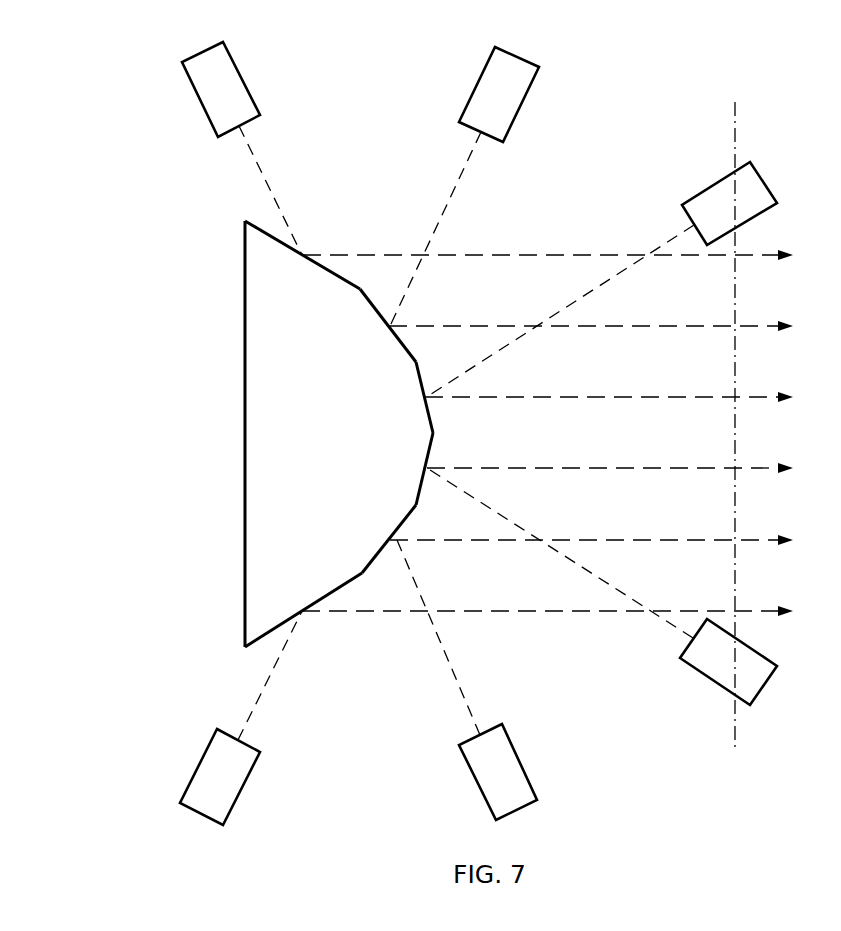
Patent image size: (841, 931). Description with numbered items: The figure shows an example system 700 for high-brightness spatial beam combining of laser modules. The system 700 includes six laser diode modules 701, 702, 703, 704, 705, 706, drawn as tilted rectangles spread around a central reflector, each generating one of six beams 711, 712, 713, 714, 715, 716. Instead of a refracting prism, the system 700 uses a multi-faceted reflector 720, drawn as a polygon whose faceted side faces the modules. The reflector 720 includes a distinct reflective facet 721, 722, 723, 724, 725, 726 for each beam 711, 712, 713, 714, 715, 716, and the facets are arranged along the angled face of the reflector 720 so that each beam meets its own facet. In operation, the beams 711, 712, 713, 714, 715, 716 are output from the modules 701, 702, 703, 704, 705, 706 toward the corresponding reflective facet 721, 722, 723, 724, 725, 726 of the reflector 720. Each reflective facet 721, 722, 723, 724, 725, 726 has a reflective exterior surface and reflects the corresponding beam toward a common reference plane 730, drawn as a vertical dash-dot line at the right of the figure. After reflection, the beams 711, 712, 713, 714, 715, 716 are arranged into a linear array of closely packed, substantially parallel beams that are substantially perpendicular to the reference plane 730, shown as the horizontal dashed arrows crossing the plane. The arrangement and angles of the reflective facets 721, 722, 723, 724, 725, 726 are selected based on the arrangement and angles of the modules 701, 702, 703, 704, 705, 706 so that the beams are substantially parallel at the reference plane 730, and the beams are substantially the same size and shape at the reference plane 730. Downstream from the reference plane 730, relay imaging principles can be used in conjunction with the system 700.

The system 700 is at (124, 181).
The laser diode module 701 is at (242, 77).
The laser diode module 702 is at (478, 82).
The laser diode module 703 is at (717, 180).
The laser diode module 704 is at (713, 686).
The laser diode module 705 is at (522, 758).
The laser diode module 706 is at (198, 767).
The beam 711 is at (262, 177).
The beam 712 is at (457, 187).
The beam 713 is at (672, 235).
The beam 714 is at (667, 625).
The beam 715 is at (452, 675).
The beam 716 is at (262, 688).
The multi-faceted reflector 720 is at (313, 455).
The reflective facet 721 is at (325, 272).
The reflective facet 722 is at (400, 350).
The reflective facet 723 is at (425, 408).
The reflective facet 724 is at (425, 457).
The reflective facet 725 is at (403, 515).
The reflective facet 726 is at (328, 597).
The reference plane 730 is at (737, 112).